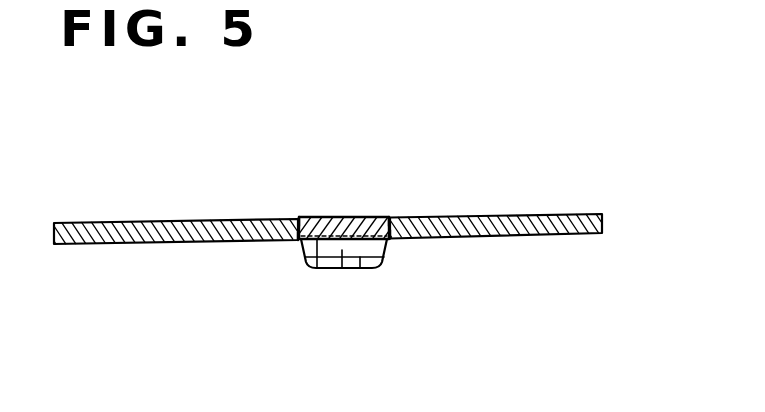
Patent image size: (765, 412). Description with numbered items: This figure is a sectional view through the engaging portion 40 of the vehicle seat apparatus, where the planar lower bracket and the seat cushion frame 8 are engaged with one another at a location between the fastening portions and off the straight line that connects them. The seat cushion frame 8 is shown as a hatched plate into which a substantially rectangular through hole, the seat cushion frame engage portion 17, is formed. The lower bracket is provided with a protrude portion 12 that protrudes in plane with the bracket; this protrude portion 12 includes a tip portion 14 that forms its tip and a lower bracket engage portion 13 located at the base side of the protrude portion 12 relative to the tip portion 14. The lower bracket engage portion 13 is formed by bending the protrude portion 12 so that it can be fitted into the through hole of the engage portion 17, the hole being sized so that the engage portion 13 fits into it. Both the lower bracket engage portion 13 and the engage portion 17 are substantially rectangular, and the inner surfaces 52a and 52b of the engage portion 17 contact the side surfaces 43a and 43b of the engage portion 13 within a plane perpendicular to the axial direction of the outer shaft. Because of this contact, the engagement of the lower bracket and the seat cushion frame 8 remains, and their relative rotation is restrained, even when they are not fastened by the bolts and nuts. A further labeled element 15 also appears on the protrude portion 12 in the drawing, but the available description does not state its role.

The seat cushion frame 8 is at (167, 222).
The engaging portion 40 is at (326, 243).
The seat cushion frame engage portion 17 is at (355, 213).
The inner surface 52a is at (307, 216).
The inner surface 52b is at (382, 215).
The side surface 43a is at (282, 239).
The side surface 43b is at (392, 238).
The protrude portion 12 is at (343, 307).
The lower bracket engage portion 13 is at (320, 268).
The tip portion 14 is at (342, 268).
The third layer 15 is at (379, 295).